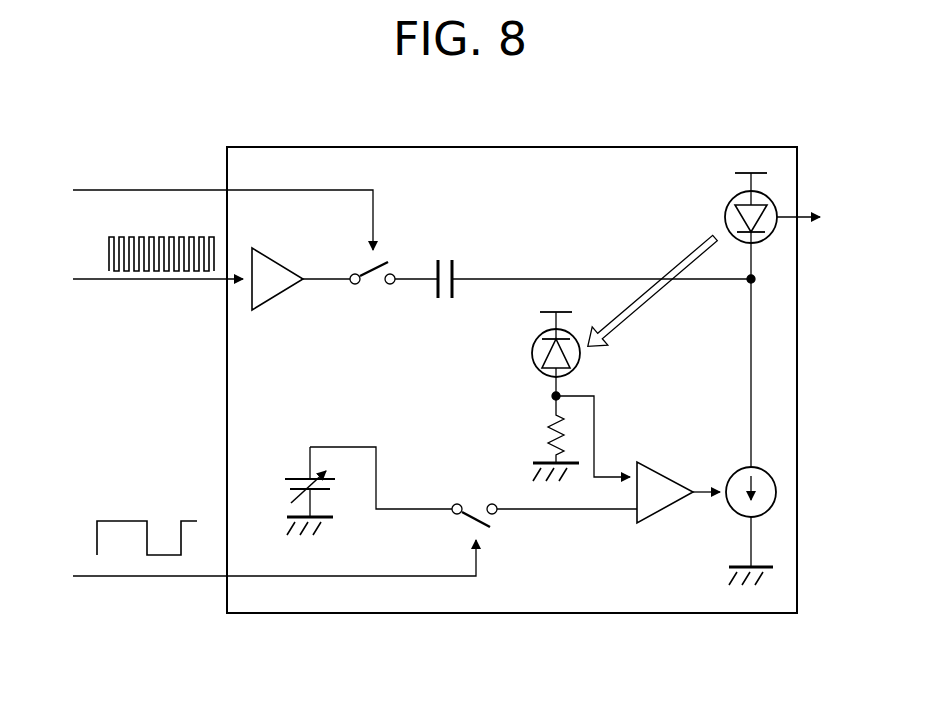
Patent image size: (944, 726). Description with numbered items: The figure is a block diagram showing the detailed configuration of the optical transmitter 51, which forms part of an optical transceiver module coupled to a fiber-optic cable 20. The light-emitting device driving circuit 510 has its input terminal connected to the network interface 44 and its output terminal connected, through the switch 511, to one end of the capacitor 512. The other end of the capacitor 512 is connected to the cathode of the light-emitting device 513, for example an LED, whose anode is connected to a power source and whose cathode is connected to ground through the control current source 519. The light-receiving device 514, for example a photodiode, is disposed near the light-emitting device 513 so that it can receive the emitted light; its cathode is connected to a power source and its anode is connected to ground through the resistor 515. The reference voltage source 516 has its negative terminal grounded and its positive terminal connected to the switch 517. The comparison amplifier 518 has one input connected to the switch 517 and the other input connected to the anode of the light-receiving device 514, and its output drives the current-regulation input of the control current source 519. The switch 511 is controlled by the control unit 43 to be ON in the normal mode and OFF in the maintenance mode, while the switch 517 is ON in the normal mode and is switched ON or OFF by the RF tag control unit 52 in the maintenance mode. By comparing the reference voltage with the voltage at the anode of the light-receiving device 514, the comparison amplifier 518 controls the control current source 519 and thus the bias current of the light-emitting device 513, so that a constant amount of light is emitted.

The optical transmitter 51 is at (585, 103).
The control unit 43 is at (204, 213).
The network interface 44 is at (139, 266).
The RF tag control unit 52 is at (255, 557).
The fiber-optic cable 20 is at (823, 219).
The light-emitting device driving circuit 510 is at (282, 298).
The switch 511 is at (371, 296).
The capacitor 512 is at (448, 259).
The light-emitting device 513 is at (728, 212).
The light-receiving device 514 is at (532, 352).
The resistor 515 is at (546, 424).
The reference voltage source 516 is at (298, 480).
The switch 517 is at (474, 500).
The comparison amplifier 518 is at (646, 462).
The control current source 519 is at (740, 518).